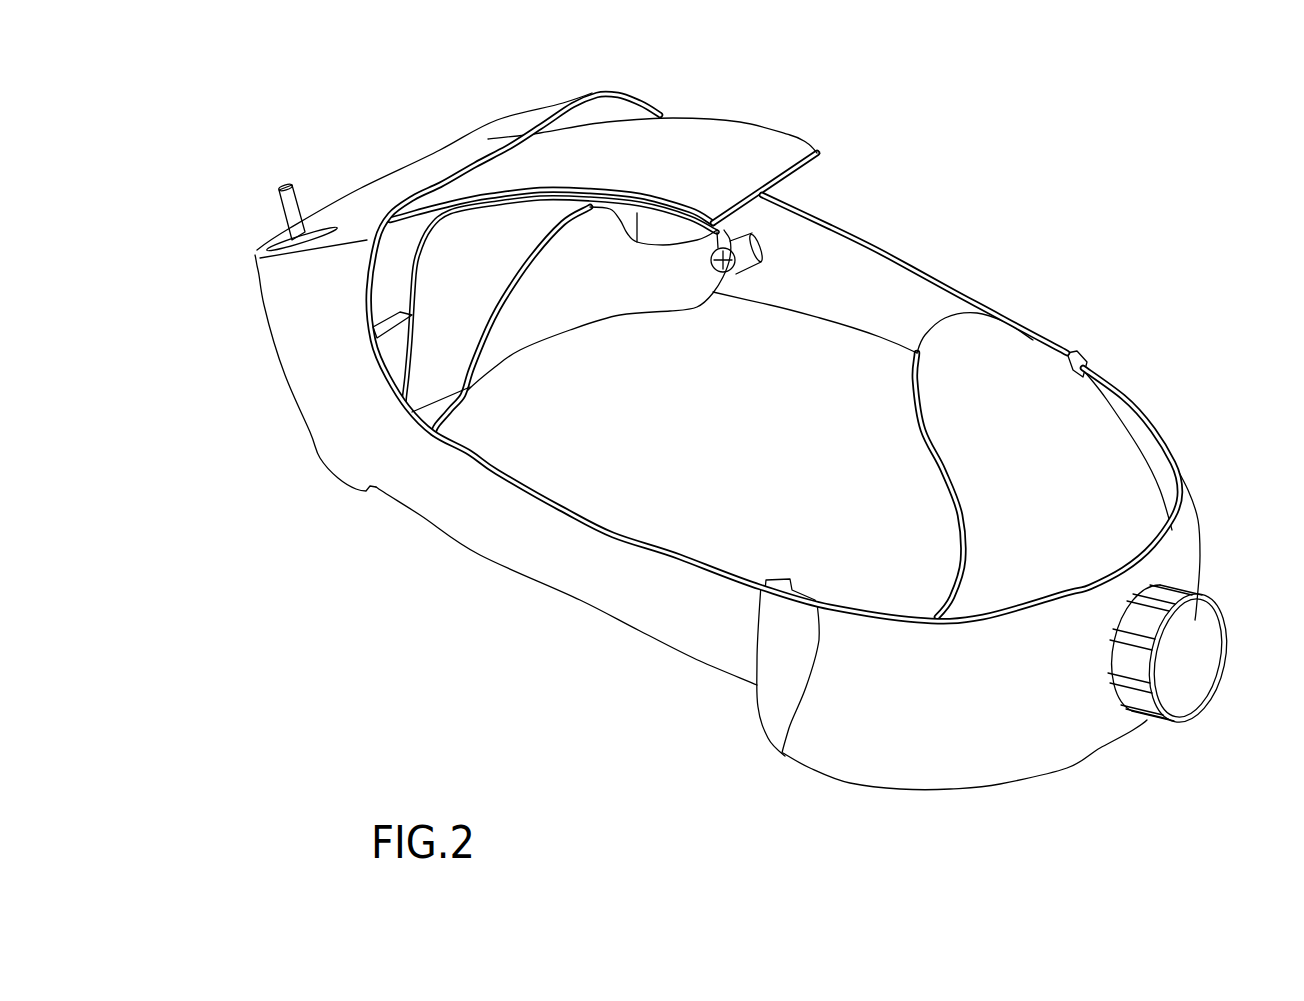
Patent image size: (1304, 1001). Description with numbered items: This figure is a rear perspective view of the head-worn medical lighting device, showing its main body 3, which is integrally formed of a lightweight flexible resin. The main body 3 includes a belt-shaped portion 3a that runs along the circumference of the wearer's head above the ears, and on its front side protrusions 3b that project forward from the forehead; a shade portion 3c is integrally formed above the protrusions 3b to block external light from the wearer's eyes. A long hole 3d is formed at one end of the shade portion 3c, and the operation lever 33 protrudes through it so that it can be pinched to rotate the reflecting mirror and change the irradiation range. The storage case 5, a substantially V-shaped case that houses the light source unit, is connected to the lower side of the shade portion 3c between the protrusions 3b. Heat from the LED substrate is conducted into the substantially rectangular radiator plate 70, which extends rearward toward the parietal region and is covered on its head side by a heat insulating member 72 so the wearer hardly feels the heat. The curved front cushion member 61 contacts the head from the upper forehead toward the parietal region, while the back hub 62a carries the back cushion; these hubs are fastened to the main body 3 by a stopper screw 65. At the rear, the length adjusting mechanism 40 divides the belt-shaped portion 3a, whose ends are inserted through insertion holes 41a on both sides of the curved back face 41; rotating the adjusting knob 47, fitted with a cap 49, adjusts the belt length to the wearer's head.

The main body 3 is at (1012, 318).
The belt-shaped portion 3a is at (569, 575).
The protrusion 3b is at (317, 384).
The shade portion 3c is at (397, 177).
The long hole 3d is at (315, 223).
The storage case 5 is at (427, 372).
The operation lever 33 is at (288, 212).
The length adjusting mechanism 40 is at (1021, 567).
The back face 41 is at (985, 750).
The insertion hole 41a is at (1087, 367).
The adjusting knob 47 is at (1198, 639).
The cap 49 is at (1186, 593).
The front cushion member 61 is at (630, 303).
The back hub 62a is at (1097, 430).
The stopper screw 65 is at (754, 260).
The radiator plate 70 is at (730, 142).
The heat insulating member 72 is at (572, 191).